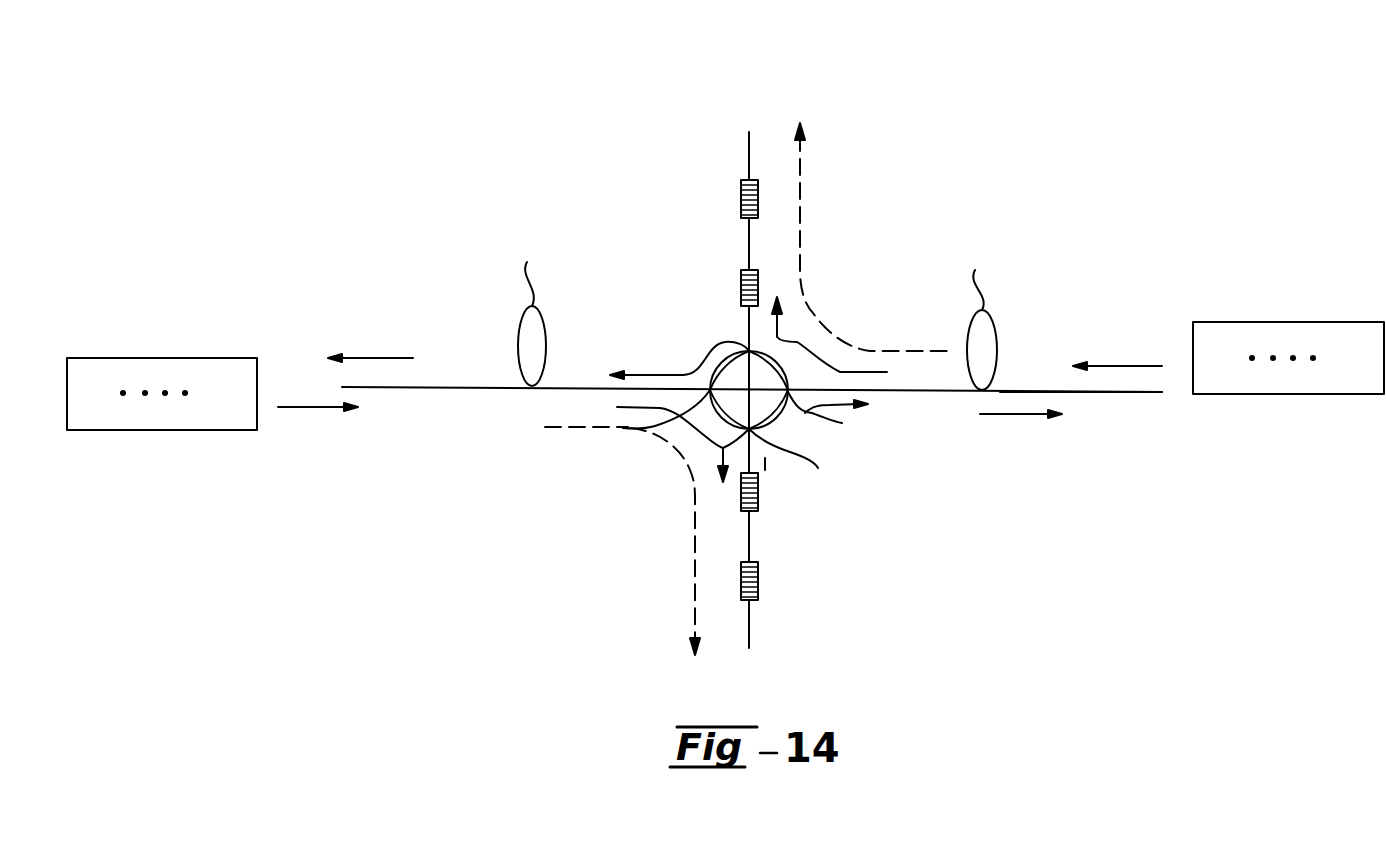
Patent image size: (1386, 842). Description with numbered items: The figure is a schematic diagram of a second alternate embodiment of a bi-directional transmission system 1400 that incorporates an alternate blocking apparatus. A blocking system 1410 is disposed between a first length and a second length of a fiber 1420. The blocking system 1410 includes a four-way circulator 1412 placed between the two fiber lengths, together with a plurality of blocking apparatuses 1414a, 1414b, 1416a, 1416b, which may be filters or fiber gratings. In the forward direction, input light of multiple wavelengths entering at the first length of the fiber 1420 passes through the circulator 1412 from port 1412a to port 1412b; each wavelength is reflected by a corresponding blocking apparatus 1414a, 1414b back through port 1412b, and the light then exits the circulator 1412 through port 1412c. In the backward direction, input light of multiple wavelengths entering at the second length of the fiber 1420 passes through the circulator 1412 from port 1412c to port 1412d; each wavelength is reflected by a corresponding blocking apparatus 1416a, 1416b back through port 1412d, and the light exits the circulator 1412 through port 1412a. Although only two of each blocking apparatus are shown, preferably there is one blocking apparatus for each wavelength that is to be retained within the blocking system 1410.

The bi-directional system 1400 is at (662, 114).
The blocking system 1410 is at (850, 253).
The four-way circulator 1412 is at (818, 468).
The port 1412a is at (630, 429).
The port 1412b is at (723, 448).
The port 1412c is at (842, 423).
The port 1412d is at (732, 313).
The blocking apparatus 1414a is at (758, 500).
The blocking apparatus 1414b is at (758, 585).
The blocking apparatus 1416a is at (741, 290).
The blocking apparatus 1416b is at (741, 195).
The fiber 1420 is at (1130, 393).